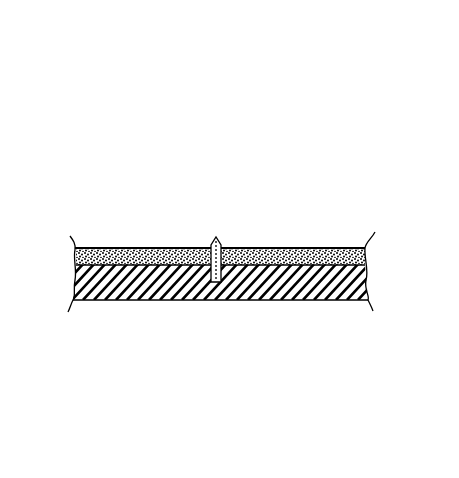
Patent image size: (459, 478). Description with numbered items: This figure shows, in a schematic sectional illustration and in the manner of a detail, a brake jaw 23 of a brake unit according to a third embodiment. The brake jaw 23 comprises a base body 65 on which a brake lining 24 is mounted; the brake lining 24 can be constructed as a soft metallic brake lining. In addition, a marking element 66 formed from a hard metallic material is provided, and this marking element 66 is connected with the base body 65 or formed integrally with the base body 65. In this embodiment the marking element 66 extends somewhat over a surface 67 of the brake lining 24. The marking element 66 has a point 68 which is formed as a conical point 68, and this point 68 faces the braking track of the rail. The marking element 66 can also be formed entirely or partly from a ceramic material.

The brake jaw 23 is at (190, 102).
The brake lining 24 is at (107, 250).
The base body 65 is at (283, 282).
The marking element 66 is at (235, 248).
The surface 67 is at (320, 249).
The point 68 is at (210, 241).